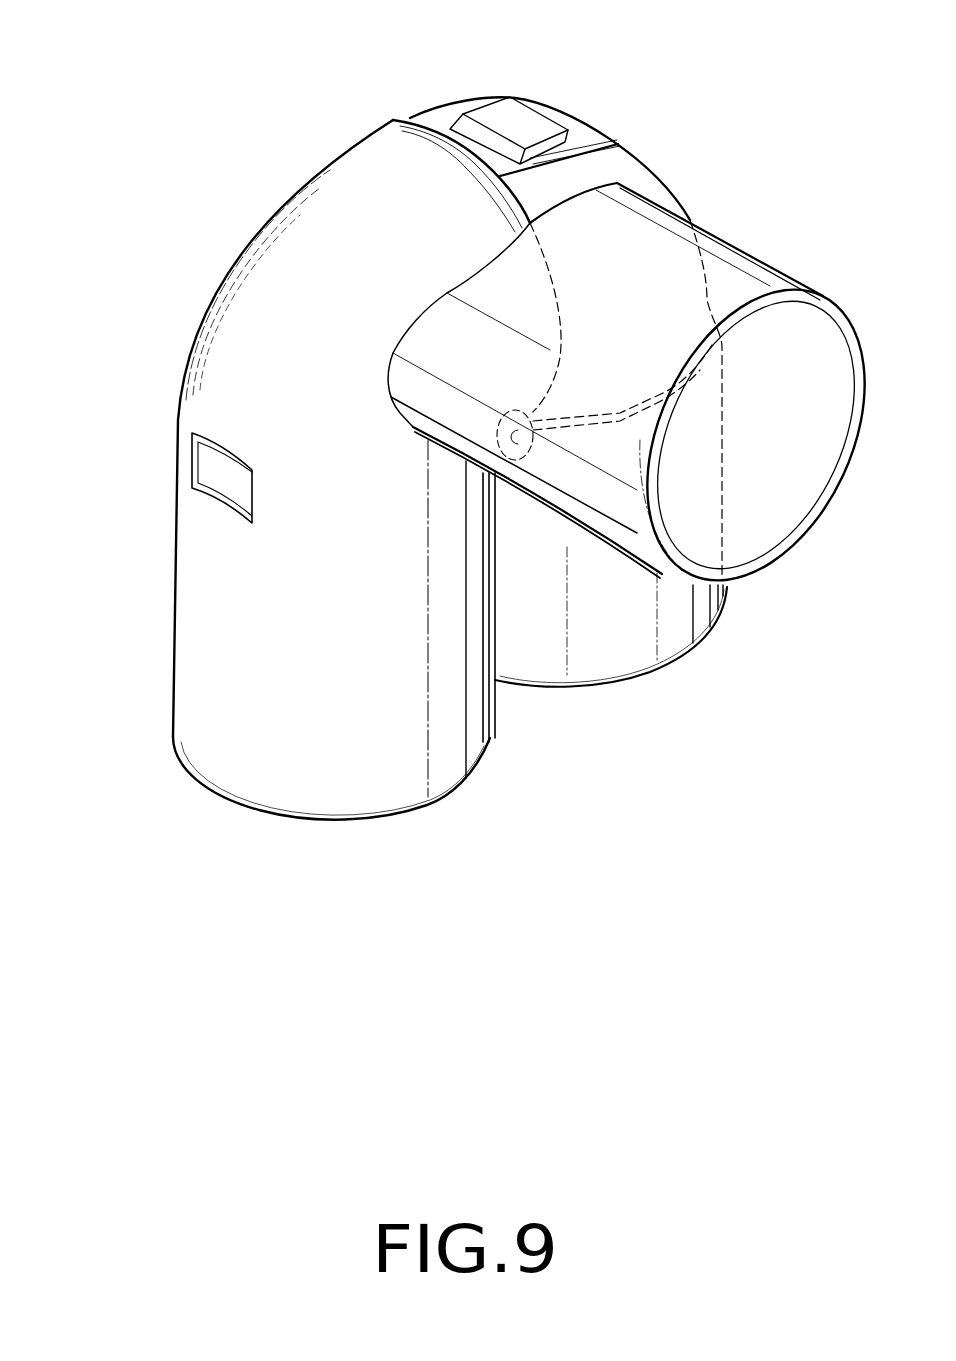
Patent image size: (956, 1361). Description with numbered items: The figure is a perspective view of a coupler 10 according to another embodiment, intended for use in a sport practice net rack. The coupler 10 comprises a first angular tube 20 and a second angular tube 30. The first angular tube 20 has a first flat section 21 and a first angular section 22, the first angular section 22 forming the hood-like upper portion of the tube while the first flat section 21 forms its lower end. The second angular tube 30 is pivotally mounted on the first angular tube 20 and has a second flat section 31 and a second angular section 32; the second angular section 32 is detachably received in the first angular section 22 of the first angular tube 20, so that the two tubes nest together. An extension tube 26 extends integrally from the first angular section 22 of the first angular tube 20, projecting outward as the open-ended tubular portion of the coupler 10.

The coupler 10 is at (158, 618).
The first angular tube 20 is at (167, 763).
The first flat section 21 is at (227, 783).
The first angular section 22 is at (318, 188).
The extension tube 26 is at (758, 268).
The second angular tube 30 is at (603, 110).
The second flat section 31 is at (597, 677).
The second angular section 32 is at (627, 158).